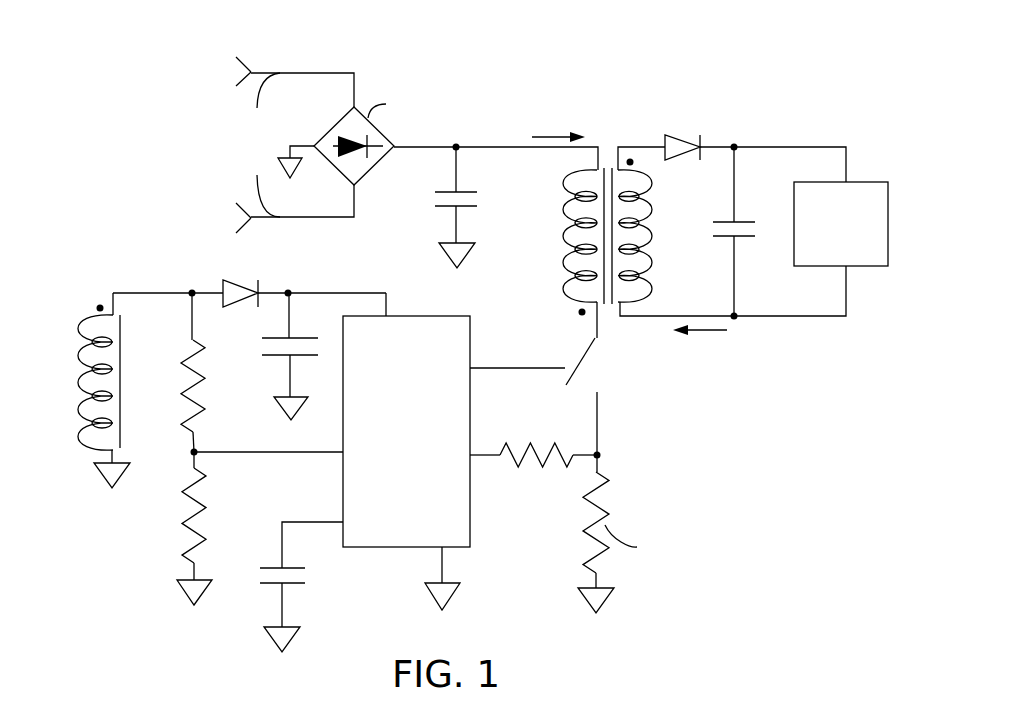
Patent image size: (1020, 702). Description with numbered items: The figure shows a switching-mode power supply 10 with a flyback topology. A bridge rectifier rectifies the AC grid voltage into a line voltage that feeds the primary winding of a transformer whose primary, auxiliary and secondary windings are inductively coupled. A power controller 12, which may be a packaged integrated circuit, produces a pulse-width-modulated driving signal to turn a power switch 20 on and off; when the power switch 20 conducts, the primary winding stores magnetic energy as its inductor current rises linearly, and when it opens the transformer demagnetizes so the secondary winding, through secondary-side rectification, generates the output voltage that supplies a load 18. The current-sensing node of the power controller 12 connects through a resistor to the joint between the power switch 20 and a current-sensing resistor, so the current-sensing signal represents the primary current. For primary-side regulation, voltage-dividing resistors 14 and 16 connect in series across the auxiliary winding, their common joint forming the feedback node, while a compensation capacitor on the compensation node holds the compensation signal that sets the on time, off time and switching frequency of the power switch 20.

The switching-mode power supply 10 is at (628, 75).
The power controller 12 is at (394, 412).
The voltage-dividing resistor 14 is at (205, 368).
The voltage-dividing resistor 16 is at (182, 512).
The load 18 is at (854, 246).
The power switch 20 is at (603, 365).